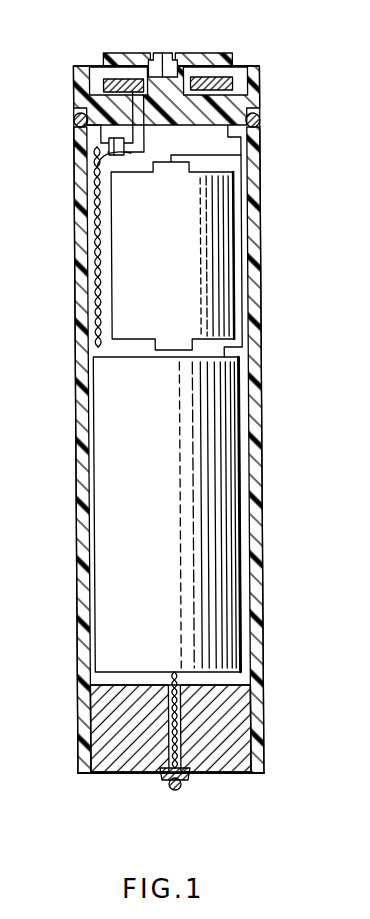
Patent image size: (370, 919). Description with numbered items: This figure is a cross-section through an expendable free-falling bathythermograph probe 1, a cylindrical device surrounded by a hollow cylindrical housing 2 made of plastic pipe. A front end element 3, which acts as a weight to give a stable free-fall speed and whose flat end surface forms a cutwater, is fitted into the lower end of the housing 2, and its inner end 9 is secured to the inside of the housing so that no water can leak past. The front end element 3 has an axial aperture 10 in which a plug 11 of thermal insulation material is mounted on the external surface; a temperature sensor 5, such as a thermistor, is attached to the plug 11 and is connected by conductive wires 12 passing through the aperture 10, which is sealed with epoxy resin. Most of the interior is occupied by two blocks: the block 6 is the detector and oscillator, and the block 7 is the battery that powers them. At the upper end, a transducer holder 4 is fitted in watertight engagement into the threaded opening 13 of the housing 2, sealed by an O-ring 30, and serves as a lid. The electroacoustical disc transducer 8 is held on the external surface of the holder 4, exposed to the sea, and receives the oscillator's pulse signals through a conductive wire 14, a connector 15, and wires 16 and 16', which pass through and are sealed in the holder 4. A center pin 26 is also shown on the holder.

The expendable free-falling bathythermograph probe 1 is at (271, 250).
The hollow cylindrical housing 2 is at (262, 413).
The front end element 3 is at (213, 760).
The transducer holder 4 is at (73, 82).
The temperature sensor 5 is at (172, 788).
The detector and oscillator block 6 is at (162, 508).
The battery 7 is at (168, 264).
The electroacoustical disc transducer 8 is at (232, 80).
The inner end 9 is at (97, 707).
The axial aperture 10 is at (184, 720).
The plug 11 is at (155, 772).
The conductive wires 12 is at (168, 674).
The opening 13 is at (196, 139).
The conductive wire 14 is at (87, 228).
The connector 15 is at (108, 148).
The conductive wire 16 is at (77, 177).
The conductive wire 16' is at (84, 122).
The center pin 26 is at (164, 56).
The O-ring 30 is at (260, 121).